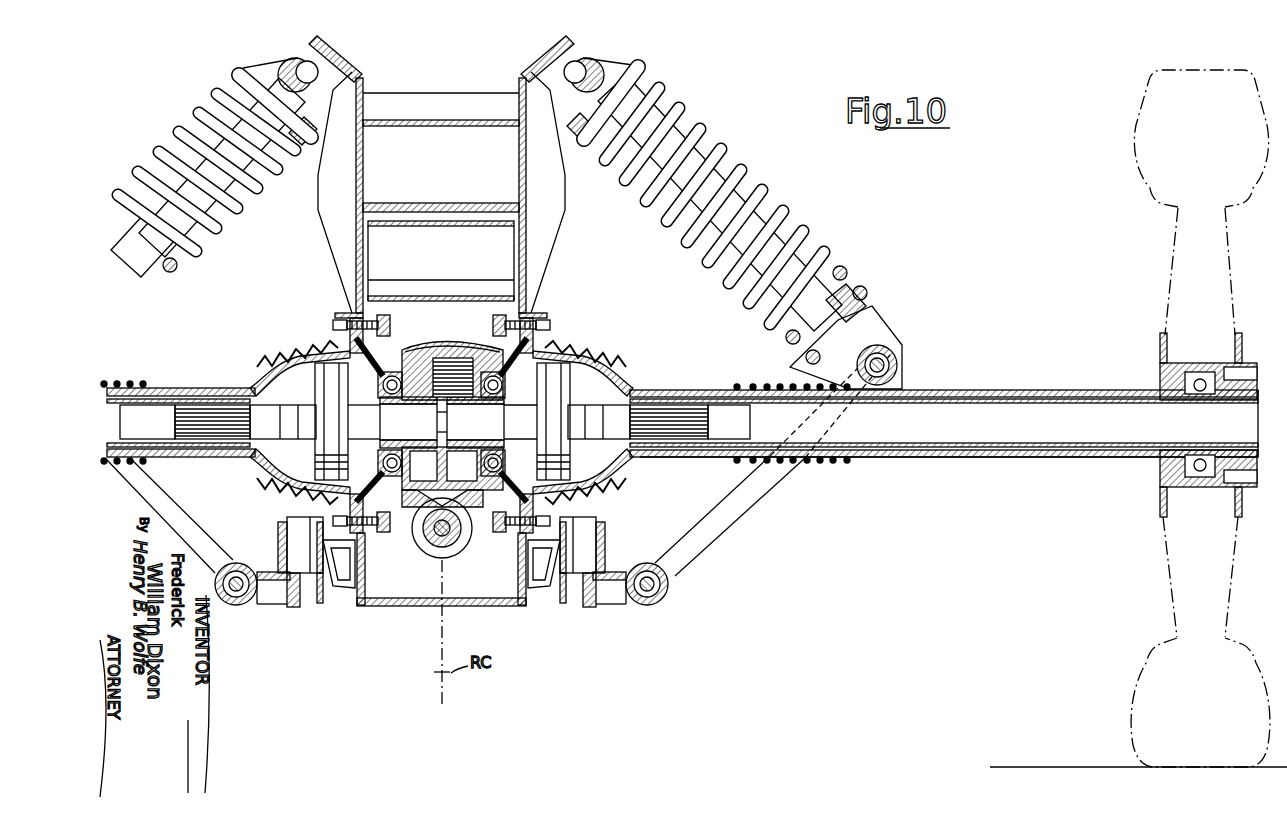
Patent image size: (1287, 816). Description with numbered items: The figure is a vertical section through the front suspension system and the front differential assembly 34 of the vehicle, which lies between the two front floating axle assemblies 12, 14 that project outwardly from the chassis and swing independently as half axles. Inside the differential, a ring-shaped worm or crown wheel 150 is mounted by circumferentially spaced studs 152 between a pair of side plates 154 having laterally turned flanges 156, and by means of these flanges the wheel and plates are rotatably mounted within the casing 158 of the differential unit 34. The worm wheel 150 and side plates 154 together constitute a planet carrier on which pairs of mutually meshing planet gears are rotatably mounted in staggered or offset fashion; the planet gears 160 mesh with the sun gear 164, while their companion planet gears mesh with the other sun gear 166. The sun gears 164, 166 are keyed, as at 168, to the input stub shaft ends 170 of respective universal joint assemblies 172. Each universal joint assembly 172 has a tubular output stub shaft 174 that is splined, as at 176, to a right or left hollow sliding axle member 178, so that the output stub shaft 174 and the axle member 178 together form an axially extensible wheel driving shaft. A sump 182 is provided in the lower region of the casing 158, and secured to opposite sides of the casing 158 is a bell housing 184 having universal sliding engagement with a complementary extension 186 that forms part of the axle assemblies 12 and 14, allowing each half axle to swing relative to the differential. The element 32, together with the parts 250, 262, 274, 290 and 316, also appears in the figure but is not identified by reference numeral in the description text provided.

The floating axle assembly 12 is at (975, 392).
The floating axle assembly 14 is at (127, 384).
The wheel 32 is at (1164, 272).
The front differential assembly 34 is at (393, 592).
The worm wheel 150 is at (452, 346).
The studs 152 is at (402, 494).
The side plates 154 is at (470, 496).
The laterally turned flanges 156 is at (383, 385).
The casing 158 is at (493, 601).
The planet gears 160 is at (468, 360).
The sun gear 164 is at (442, 479).
The sun gear 166 is at (452, 468).
The key 168 is at (442, 422).
The input stub shaft ends 170 is at (376, 451).
The universal joint assemblies 172 is at (322, 466).
The tubular output stub shafts 174 is at (300, 404).
The splines 176 is at (222, 437).
The hollow sliding axle members 178 is at (165, 456).
The sump 182 is at (462, 606).
The bell housing 184 is at (316, 337).
The complementary extension 186 is at (268, 360).
The housing tube 250 is at (940, 458).
The rivets 262 is at (141, 384).
The gusset 274 is at (340, 590).
The bushing 290 is at (212, 598).
The spring 316 is at (663, 224).